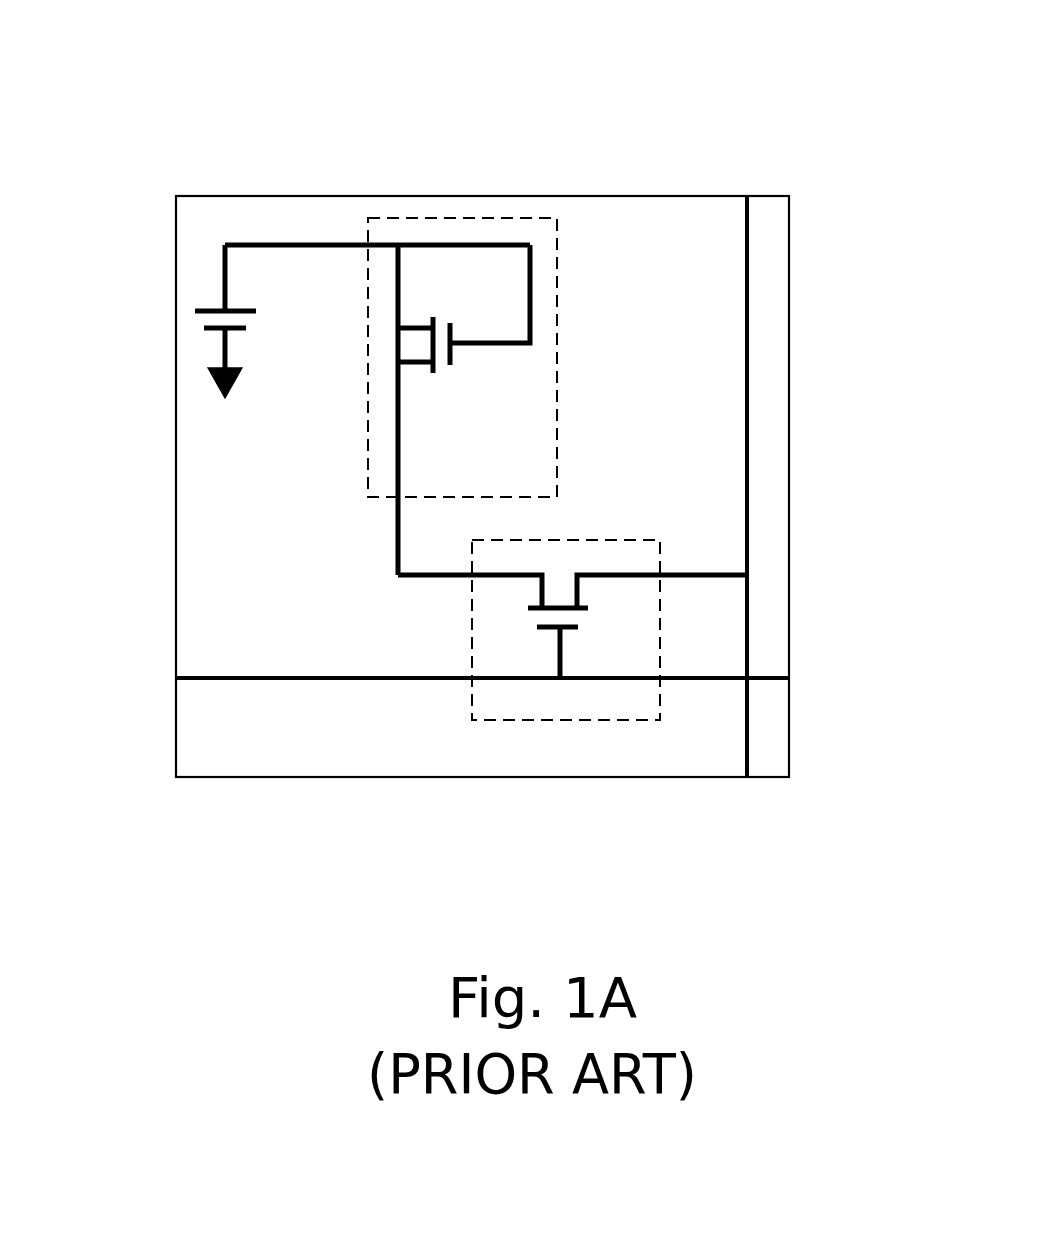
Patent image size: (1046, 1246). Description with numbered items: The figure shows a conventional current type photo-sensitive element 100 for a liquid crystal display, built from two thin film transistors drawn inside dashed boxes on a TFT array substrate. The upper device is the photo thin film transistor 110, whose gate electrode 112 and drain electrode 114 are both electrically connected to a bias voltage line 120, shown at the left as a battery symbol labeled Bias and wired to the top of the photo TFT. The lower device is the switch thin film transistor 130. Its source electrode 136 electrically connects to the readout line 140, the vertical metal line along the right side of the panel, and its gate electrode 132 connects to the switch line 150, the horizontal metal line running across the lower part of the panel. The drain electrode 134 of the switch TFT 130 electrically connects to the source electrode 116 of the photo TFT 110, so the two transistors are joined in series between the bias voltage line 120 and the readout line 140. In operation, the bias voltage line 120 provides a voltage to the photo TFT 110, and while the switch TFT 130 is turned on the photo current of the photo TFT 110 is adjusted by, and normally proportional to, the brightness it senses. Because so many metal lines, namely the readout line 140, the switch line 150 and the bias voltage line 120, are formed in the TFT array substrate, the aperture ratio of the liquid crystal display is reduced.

The current type photo-sensitive element 100 is at (456, 133).
The photo thin film transistor 110 is at (624, 396).
The gate electrode 112 is at (488, 343).
The drain electrode 114 is at (400, 287).
The source electrode 116 is at (400, 417).
The bias voltage line 120 is at (224, 272).
The switch thin film transistor 130 is at (649, 648).
The gate electrode 132 is at (560, 652).
The drain electrode 134 is at (498, 577).
The source electrode 136 is at (618, 572).
The readout line 140 is at (748, 258).
The switch line 150 is at (250, 677).